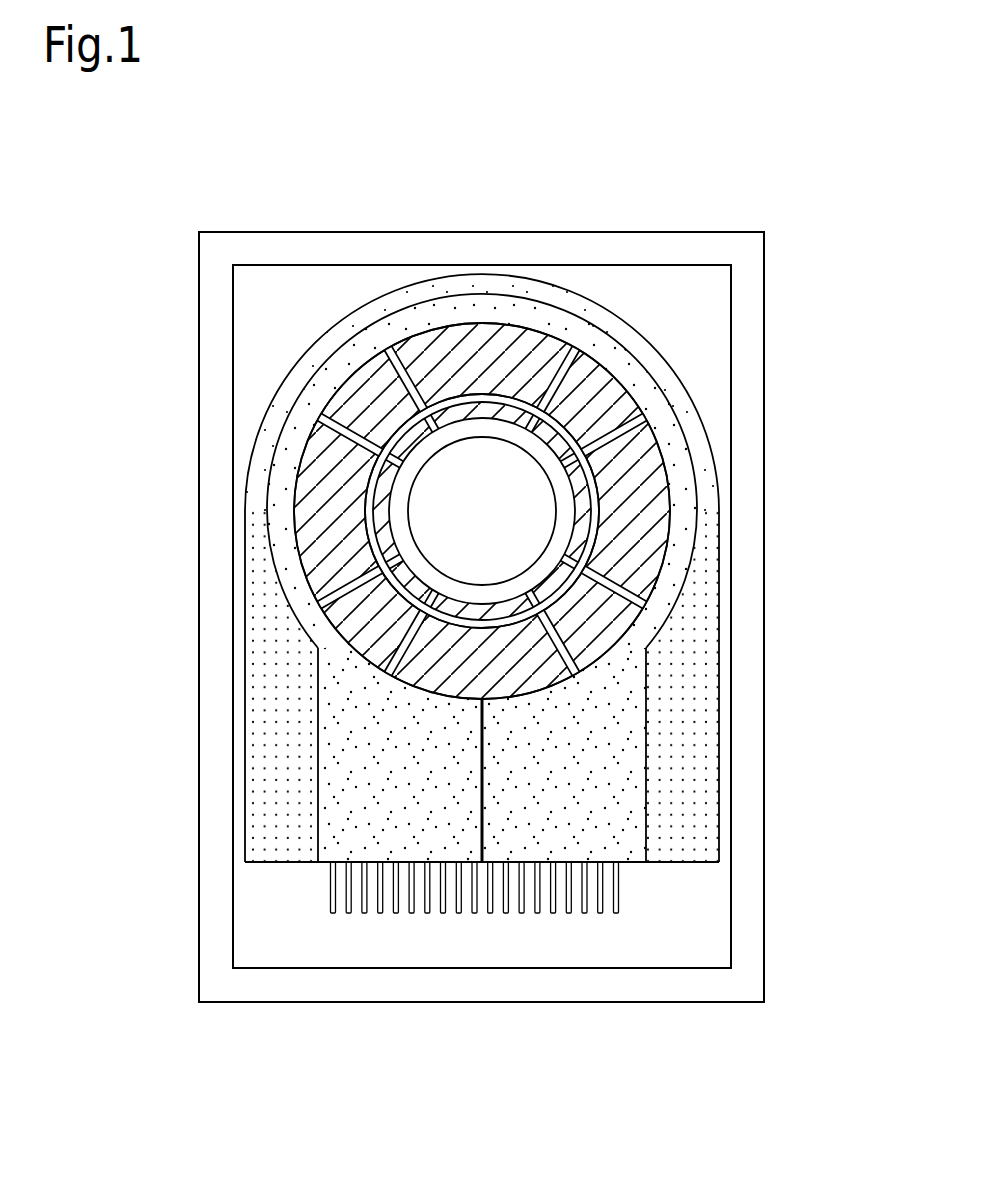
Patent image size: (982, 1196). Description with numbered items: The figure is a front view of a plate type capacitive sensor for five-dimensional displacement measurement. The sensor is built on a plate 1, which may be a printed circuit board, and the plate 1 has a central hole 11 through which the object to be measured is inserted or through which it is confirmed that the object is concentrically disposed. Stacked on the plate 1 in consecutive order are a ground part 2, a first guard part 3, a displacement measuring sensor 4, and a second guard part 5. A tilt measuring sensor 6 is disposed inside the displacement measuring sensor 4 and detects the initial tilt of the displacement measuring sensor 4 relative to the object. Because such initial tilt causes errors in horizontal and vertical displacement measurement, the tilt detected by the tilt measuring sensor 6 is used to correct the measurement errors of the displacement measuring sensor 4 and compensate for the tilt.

The plate 1 is at (766, 706).
The ground part 2 is at (262, 905).
The first guard part 3 is at (680, 805).
The displacement measuring sensor 4 is at (317, 494).
The second guard part 5 is at (653, 395).
The tilt measuring sensor 6 is at (337, 630).
The hole 11 is at (556, 506).